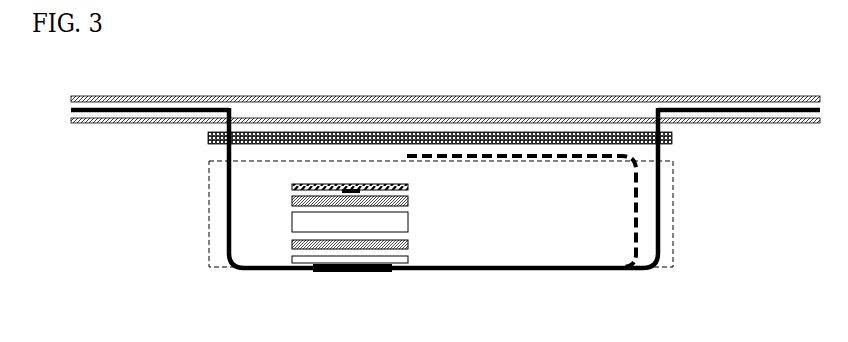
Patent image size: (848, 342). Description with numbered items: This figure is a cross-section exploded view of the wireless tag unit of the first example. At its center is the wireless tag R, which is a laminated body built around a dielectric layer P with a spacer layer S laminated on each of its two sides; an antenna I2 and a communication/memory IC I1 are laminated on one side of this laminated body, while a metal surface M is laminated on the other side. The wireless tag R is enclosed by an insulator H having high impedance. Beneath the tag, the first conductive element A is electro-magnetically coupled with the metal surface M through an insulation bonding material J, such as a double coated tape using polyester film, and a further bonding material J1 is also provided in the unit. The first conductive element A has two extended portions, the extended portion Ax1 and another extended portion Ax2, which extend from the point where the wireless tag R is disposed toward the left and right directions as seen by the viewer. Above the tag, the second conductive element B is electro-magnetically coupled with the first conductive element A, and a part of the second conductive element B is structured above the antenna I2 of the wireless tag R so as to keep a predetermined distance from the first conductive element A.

The extended portion of first conductive element Ax1 is at (150, 110).
The another extended portion of first conductive element Ax2 is at (725, 110).
The first conductive element A is at (570, 268).
The bonding material 1 J1 is at (668, 145).
The insulator H is at (673, 195).
The second conductive element B is at (580, 156).
The wireless tag R is at (377, 221).
The antenna I2 is at (408, 187).
The IC having communication/memory functions I1 is at (357, 190).
The spacer layer S is at (408, 201).
The dielectric layer P is at (408, 229).
The metal surface M is at (408, 260).
The bonding material J is at (318, 272).